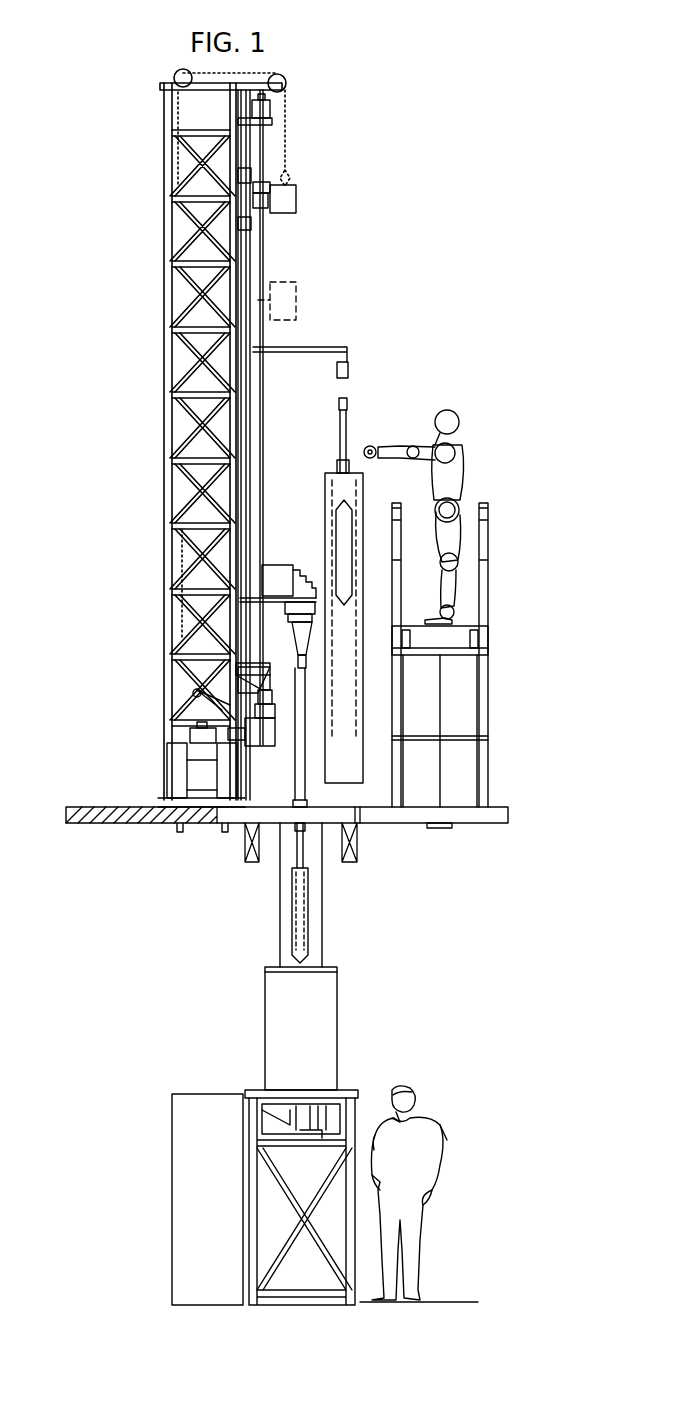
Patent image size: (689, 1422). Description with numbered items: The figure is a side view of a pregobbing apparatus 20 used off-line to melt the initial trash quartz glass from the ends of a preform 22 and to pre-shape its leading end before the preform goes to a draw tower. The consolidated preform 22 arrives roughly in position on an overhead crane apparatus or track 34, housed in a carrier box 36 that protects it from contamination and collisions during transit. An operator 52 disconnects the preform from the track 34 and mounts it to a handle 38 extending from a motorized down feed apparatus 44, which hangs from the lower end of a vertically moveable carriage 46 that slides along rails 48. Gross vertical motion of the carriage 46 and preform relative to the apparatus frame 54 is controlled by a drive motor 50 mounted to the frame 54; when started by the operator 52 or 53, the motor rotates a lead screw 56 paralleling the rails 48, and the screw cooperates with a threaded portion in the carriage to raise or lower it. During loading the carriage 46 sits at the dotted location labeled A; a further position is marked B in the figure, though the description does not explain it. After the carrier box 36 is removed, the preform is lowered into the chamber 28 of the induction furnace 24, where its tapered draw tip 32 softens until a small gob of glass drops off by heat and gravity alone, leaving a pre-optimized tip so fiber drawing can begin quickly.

The pregobbing apparatus 20 is at (152, 602).
The preform 22 is at (280, 914).
The induction furnace 24 is at (265, 1012).
The chamber 28 is at (310, 1012).
The tapered draw tip 32 is at (312, 962).
The overhead crane apparatus or track 34 is at (350, 345).
The carrier box 36 is at (325, 475).
The handle 38 is at (300, 703).
The motorized down feed apparatus 44 is at (300, 638).
The vertically moveable carriage 46 is at (270, 565).
The rails 48 is at (252, 242).
The drive motor 50 is at (200, 730).
The operator 52 is at (460, 410).
The operator 53 is at (425, 1122).
The apparatus frame 54 is at (165, 280).
The lead screw 56 is at (268, 262).
The loading location A is at (300, 300).
The detail region B is at (297, 565).